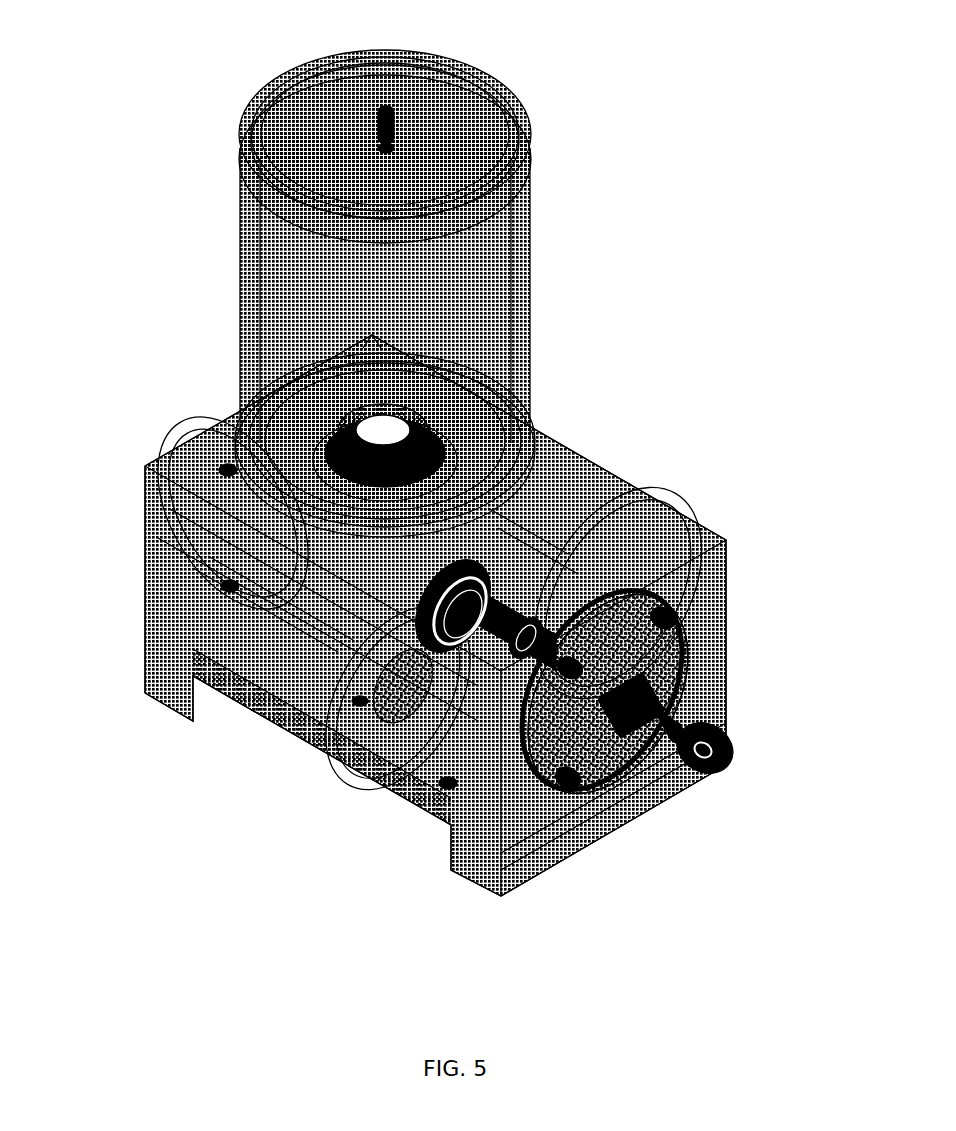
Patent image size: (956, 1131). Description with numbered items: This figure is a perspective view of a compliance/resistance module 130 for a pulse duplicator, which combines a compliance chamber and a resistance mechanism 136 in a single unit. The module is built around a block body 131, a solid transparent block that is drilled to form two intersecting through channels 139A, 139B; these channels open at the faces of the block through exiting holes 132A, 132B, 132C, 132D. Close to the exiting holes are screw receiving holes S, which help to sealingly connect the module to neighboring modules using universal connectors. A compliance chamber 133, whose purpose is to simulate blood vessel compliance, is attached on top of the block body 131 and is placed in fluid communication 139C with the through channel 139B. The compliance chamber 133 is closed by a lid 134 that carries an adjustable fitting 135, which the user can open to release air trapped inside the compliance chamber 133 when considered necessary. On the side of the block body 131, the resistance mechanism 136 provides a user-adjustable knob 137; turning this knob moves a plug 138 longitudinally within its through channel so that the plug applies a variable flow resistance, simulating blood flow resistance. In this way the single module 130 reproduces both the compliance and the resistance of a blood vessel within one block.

The compliance/resistance module 130 is at (684, 116).
The block body 131 is at (690, 520).
The exiting hole 132A is at (382, 692).
The exiting hole 132B is at (592, 548).
The exiting hole 132C is at (252, 506).
The exiting hole 132D is at (448, 640).
The compliance chamber 133 is at (268, 302).
The lid 134 is at (455, 64).
The adjustable fitting 135 is at (372, 104).
The resistance mechanism 136 is at (658, 648).
The user-adjustable knob 137 is at (706, 716).
The plug 138 is at (452, 652).
The through channel 139A is at (520, 548).
The through channel 139B is at (300, 555).
The fluid communication 139C is at (298, 400).
The screw receiving holes S is at (218, 458).